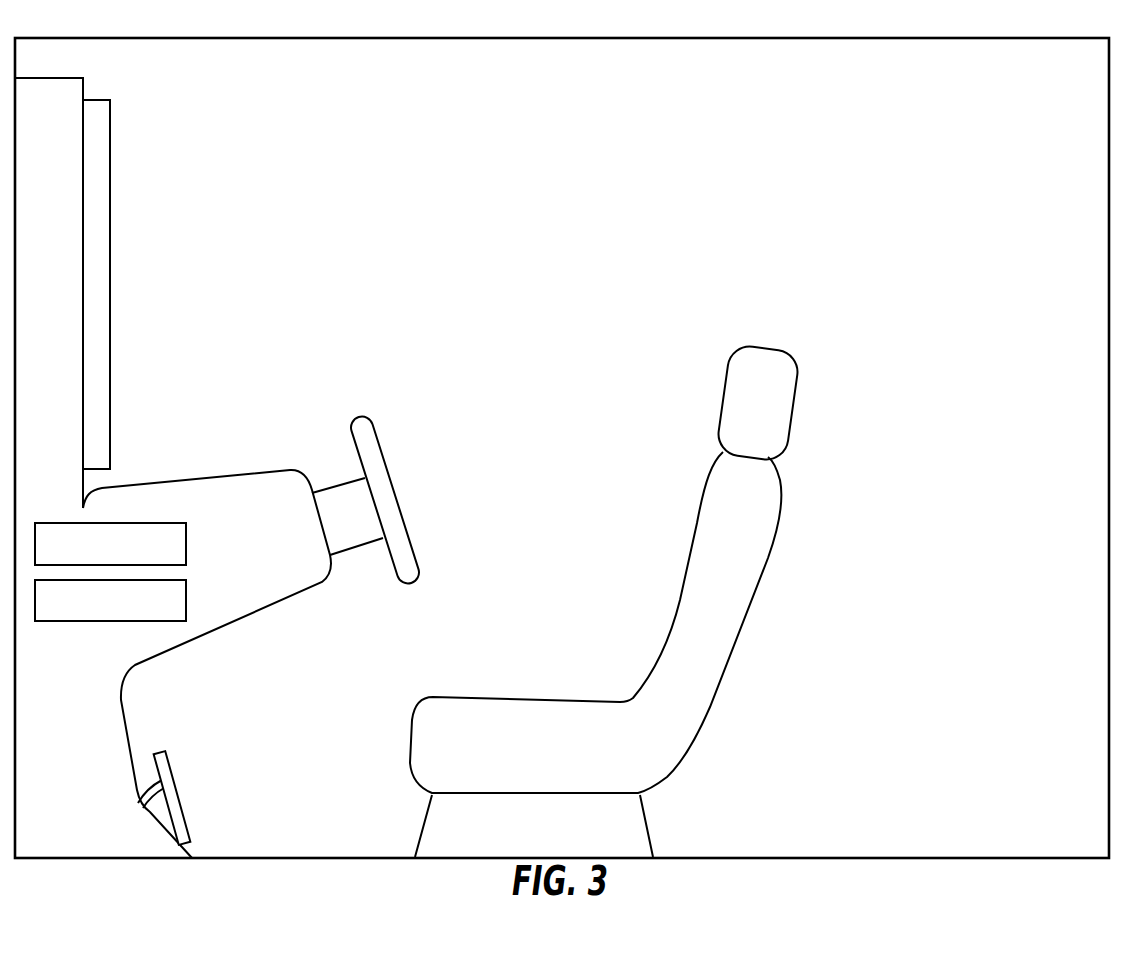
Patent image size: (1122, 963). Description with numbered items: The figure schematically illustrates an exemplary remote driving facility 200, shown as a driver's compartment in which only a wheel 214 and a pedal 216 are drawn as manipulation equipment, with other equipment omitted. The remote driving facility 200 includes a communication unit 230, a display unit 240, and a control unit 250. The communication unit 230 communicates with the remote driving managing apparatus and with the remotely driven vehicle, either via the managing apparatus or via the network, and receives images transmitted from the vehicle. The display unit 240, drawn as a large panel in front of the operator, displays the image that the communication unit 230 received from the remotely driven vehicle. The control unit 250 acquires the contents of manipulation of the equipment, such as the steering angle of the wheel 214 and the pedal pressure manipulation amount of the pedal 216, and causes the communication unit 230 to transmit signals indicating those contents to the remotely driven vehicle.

The remote driving facility 200 is at (63, 14).
The wheel 214 is at (378, 423).
The pedal 216 is at (168, 758).
The communication unit 230 is at (190, 548).
The display unit 240 is at (113, 138).
The control unit 250 is at (157, 603).